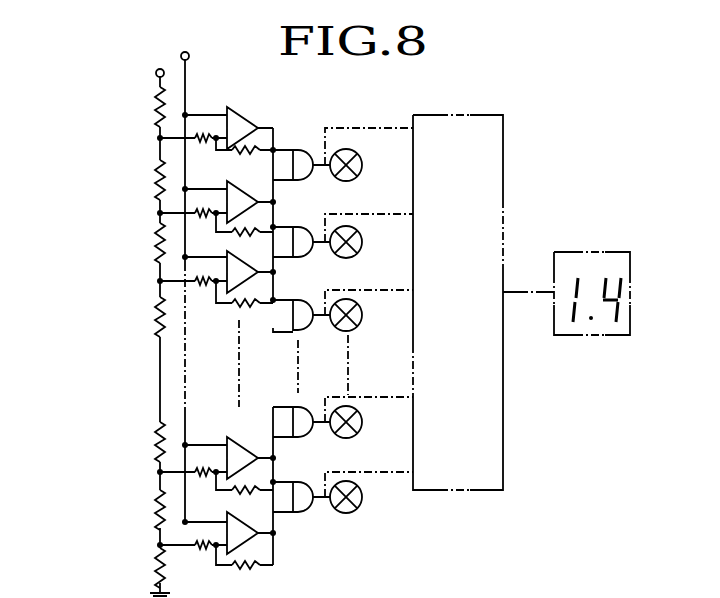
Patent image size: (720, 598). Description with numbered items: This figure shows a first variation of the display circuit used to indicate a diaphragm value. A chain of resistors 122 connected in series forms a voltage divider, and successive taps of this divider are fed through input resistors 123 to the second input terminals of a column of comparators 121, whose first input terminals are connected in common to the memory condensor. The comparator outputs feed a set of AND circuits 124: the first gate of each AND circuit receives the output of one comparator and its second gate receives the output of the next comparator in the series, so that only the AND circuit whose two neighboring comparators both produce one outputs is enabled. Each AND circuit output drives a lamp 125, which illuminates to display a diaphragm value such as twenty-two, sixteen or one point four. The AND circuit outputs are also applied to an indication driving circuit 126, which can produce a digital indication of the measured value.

The comparators 121 is at (263, 577).
The resistors 122 is at (158, 562).
The input resistors 123 is at (199, 144).
The AND circuits 124 is at (298, 484).
The lamps 125 is at (362, 167).
The indication driving circuit 126 is at (497, 128).